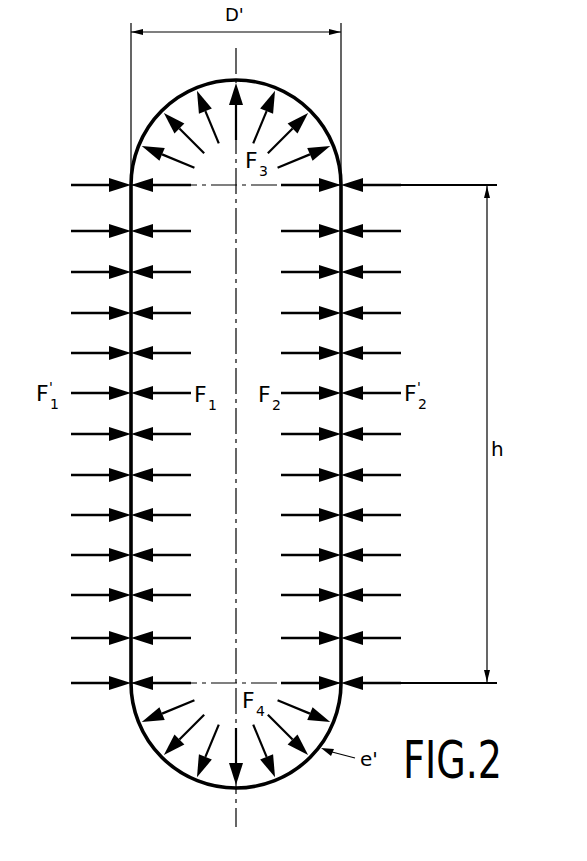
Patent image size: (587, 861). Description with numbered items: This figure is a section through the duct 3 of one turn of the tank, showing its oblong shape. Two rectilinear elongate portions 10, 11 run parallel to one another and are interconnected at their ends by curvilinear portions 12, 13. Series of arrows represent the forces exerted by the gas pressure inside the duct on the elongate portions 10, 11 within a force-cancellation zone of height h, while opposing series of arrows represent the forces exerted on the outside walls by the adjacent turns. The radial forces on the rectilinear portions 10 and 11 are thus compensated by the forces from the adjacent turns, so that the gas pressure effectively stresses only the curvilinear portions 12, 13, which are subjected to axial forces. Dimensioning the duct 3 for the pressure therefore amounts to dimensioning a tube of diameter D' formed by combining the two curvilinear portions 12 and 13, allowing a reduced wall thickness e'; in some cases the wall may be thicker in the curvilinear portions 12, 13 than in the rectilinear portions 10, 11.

The duct 3 is at (266, 304).
The rectilinear elongate portion 10 is at (131, 457).
The rectilinear elongate portion 11 is at (341, 452).
The curvilinear portion 12 is at (263, 82).
The curvilinear portion 13 is at (182, 773).